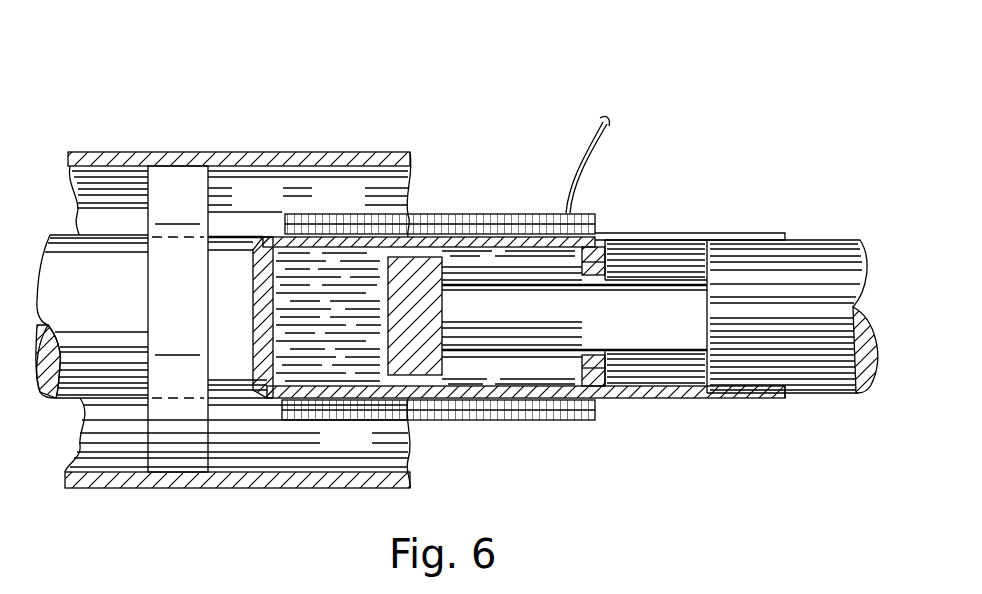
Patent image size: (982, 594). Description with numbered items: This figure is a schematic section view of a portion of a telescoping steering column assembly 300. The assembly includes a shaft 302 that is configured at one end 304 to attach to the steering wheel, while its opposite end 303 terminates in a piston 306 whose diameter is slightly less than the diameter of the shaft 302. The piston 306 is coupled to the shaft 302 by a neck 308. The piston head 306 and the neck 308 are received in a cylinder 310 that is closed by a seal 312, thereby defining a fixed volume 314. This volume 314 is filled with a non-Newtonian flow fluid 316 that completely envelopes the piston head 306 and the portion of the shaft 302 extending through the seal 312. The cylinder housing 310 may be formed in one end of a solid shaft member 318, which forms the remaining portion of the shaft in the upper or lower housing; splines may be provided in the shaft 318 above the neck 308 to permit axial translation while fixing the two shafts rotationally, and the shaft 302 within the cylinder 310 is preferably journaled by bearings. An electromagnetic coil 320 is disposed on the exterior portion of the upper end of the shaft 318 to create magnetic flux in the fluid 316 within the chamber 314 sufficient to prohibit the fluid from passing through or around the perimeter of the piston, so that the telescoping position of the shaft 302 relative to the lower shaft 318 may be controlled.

The telescoping steering column assembly 300 is at (483, 51).
The shaft 302 is at (818, 248).
The one end 304 is at (786, 317).
The opposite end 303 is at (443, 285).
The piston 306 is at (428, 218).
The neck 308 is at (627, 319).
The cylinder 310 is at (697, 238).
The seal 312 is at (597, 385).
The fixed volume 314 is at (311, 366).
The non-Newtonian flow fluid 316 is at (345, 260).
The solid shaft member 318 is at (232, 262).
The electromagnetic coil 320 is at (517, 408).